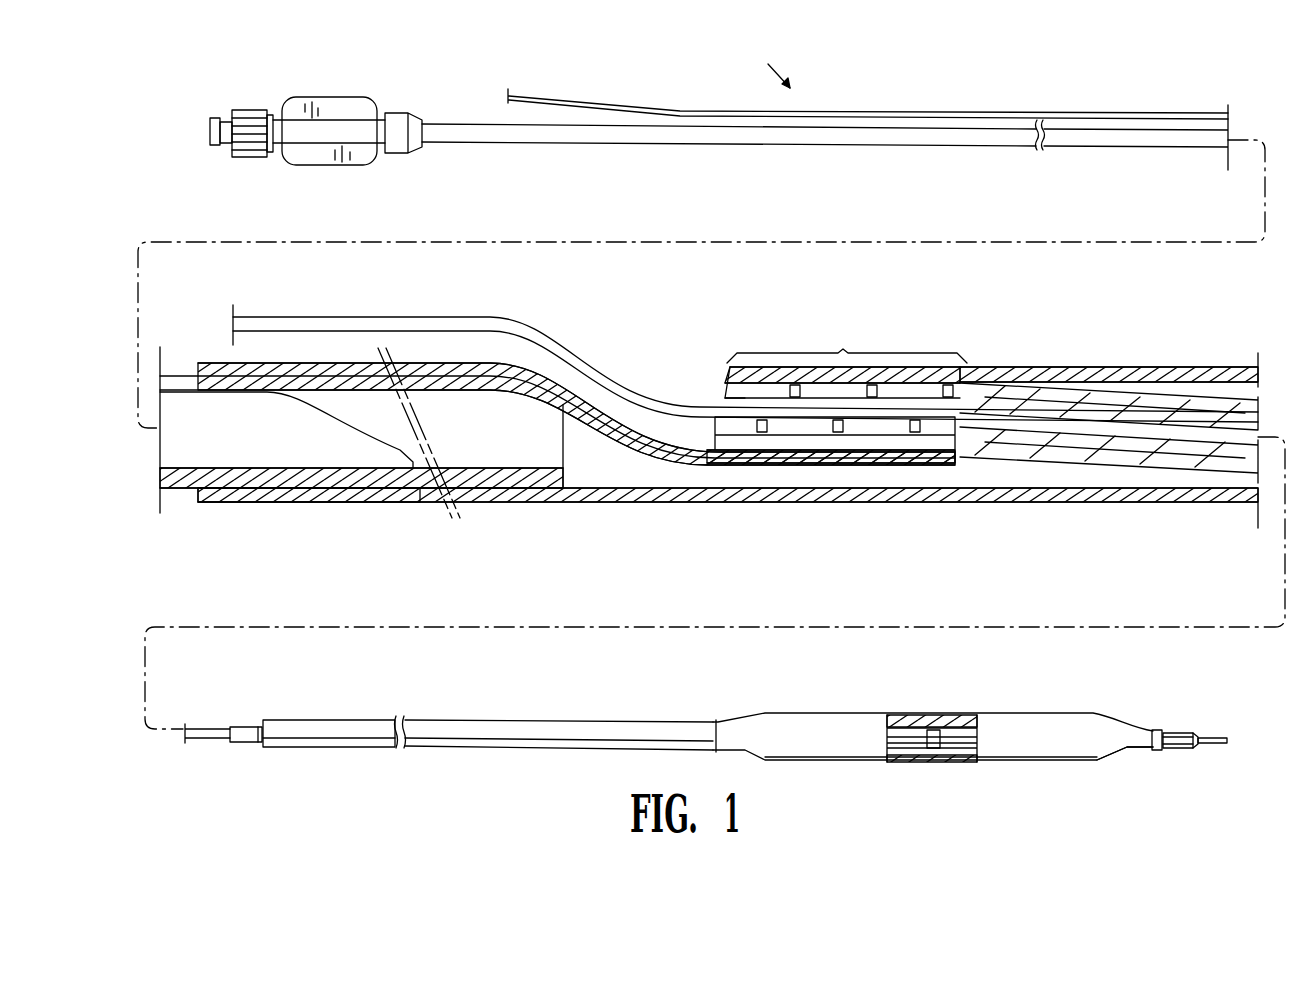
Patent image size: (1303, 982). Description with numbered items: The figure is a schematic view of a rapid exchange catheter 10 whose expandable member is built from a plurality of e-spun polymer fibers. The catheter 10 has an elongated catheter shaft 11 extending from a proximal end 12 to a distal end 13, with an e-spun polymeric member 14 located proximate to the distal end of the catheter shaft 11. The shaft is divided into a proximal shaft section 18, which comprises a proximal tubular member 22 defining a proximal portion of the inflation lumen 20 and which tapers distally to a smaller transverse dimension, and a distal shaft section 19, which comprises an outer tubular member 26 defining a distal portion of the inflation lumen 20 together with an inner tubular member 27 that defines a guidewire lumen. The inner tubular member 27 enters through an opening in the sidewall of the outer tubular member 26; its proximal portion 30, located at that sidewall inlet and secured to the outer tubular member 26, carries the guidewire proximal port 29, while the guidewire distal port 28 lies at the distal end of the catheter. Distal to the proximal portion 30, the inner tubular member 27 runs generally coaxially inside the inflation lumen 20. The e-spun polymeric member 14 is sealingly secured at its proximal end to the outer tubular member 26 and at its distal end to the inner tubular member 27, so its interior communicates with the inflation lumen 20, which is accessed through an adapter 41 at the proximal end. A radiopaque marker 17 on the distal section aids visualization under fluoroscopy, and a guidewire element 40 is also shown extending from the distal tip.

The catheter 10 is at (770, 63).
The catheter shaft 11 is at (463, 124).
The proximal end 12 is at (430, 122).
The distal end 13 is at (1173, 732).
The e-spun polymeric member 14 is at (1025, 715).
The radiopaque marker 17 is at (1123, 750).
The proximal shaft section 18 is at (930, 152).
The distal shaft section 19 is at (328, 747).
The inflation lumen 20 is at (1028, 483).
The proximal tubular member 22 is at (1098, 152).
The outer tubular member 26 is at (995, 367).
The inner tubular member 27 is at (1157, 403).
The guidewire distal port 28 is at (1202, 747).
The guidewire proximal port 29 is at (717, 392).
The proximal portion 30 is at (837, 390).
The distal wire 40 is at (1217, 738).
The adapter 41 is at (376, 115).